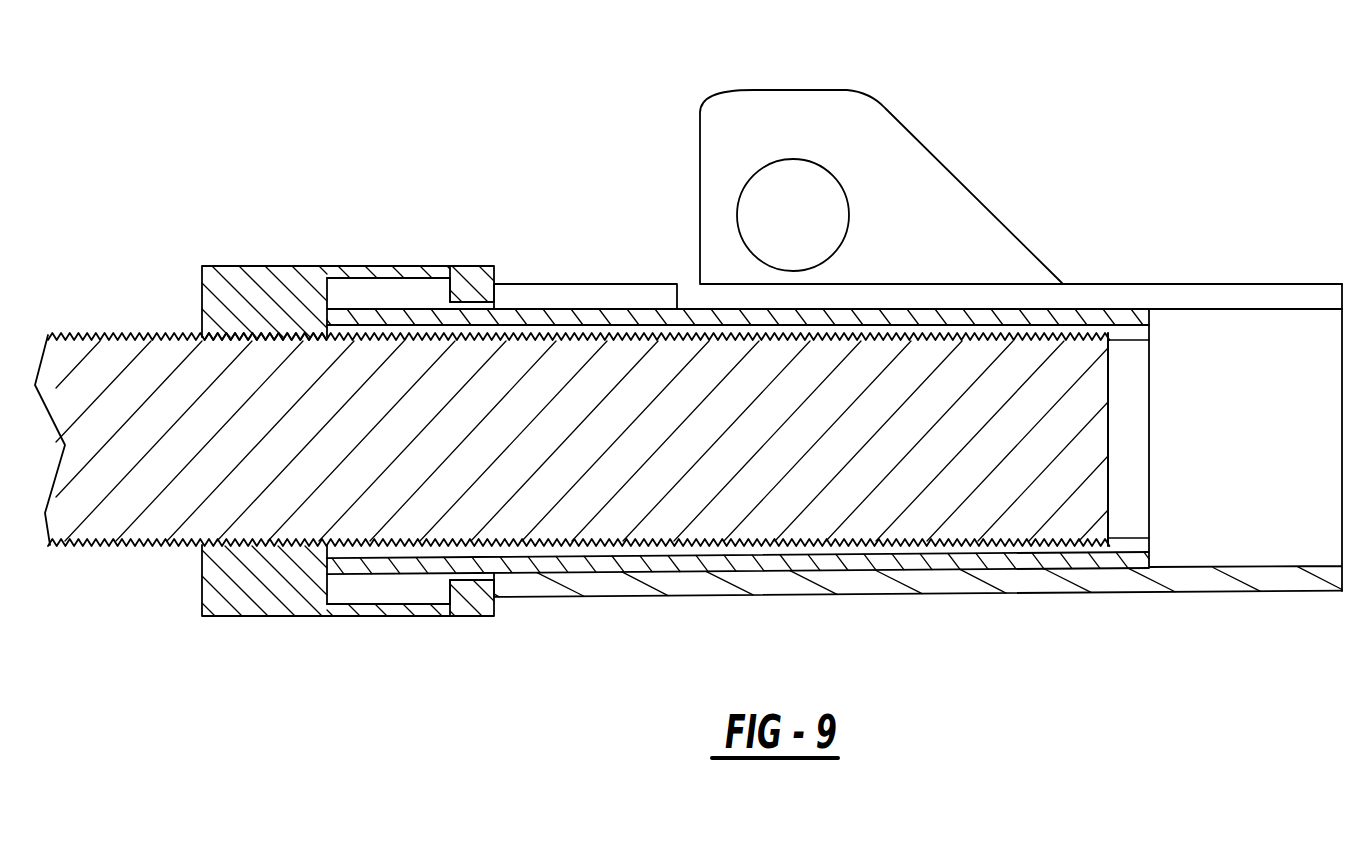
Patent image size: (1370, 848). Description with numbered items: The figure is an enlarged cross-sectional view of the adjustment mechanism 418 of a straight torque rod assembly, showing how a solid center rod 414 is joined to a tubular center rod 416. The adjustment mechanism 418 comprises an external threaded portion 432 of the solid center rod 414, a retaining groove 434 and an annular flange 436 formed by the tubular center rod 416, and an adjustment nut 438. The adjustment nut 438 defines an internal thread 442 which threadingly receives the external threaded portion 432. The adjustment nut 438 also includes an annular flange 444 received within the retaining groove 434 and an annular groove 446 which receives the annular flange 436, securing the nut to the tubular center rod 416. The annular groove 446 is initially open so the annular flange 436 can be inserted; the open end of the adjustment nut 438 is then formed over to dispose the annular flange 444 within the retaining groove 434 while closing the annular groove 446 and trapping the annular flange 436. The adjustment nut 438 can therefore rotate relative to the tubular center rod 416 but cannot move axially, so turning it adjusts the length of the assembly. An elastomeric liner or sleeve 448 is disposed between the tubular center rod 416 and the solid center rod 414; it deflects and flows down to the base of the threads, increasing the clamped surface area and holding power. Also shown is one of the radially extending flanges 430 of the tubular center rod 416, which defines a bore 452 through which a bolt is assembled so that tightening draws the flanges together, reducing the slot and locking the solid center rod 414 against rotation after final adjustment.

The solid center rod 414 is at (1068, 425).
The tubular center rod 416 is at (1126, 580).
The adjustment mechanism 418 is at (579, 179).
The radially extending flanges 430 is at (778, 100).
The external threaded portion 432 is at (117, 550).
The retaining groove 434 is at (483, 580).
The annular flange 436 is at (368, 590).
The adjustment nut 438 is at (240, 293).
The internal thread 442 is at (242, 342).
The annular flange 444 is at (477, 287).
The annular groove 446 is at (357, 276).
The elastomeric liner or sleeve 448 is at (1070, 321).
The bore 452 is at (763, 167).